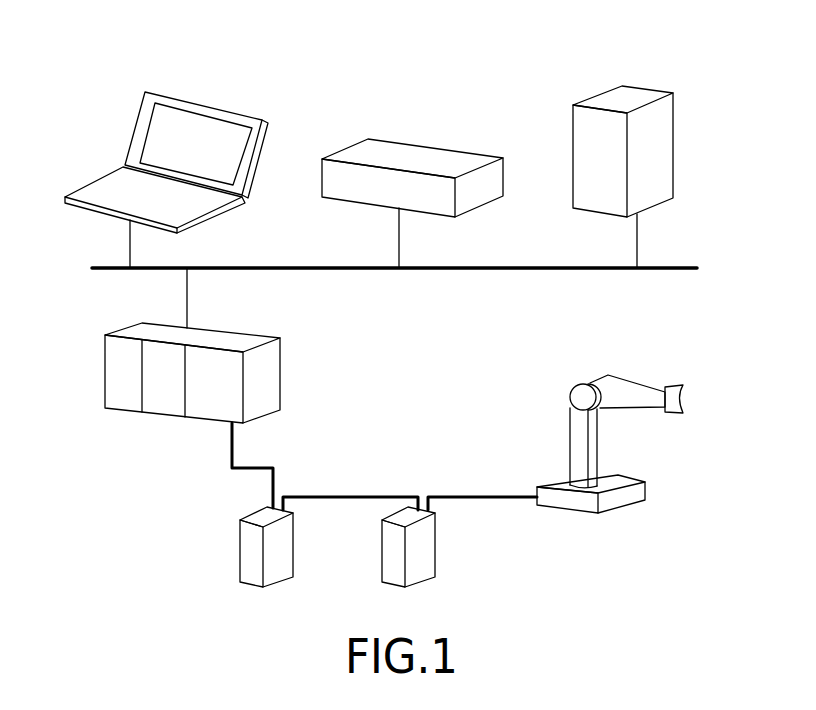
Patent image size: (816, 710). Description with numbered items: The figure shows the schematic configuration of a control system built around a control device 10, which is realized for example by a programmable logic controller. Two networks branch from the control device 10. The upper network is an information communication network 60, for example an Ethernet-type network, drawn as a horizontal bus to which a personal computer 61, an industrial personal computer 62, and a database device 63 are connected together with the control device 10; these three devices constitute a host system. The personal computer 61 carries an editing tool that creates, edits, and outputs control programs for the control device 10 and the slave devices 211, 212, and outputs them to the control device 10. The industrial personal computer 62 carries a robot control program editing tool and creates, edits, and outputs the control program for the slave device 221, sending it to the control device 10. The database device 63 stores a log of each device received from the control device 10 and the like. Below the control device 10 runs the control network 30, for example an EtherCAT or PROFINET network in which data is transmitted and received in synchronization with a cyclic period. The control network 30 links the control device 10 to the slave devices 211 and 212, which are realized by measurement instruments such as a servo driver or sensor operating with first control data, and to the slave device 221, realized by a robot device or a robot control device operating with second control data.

The control device 10 is at (257, 337).
The control network 30 is at (260, 465).
The information communication network 60 is at (683, 265).
The personal computer 61 is at (253, 120).
The industrial personal computer 62 is at (457, 157).
The database device 63 is at (650, 93).
The slave device 211 is at (242, 553).
The slave device 212 is at (385, 553).
The slave device 221 is at (635, 383).